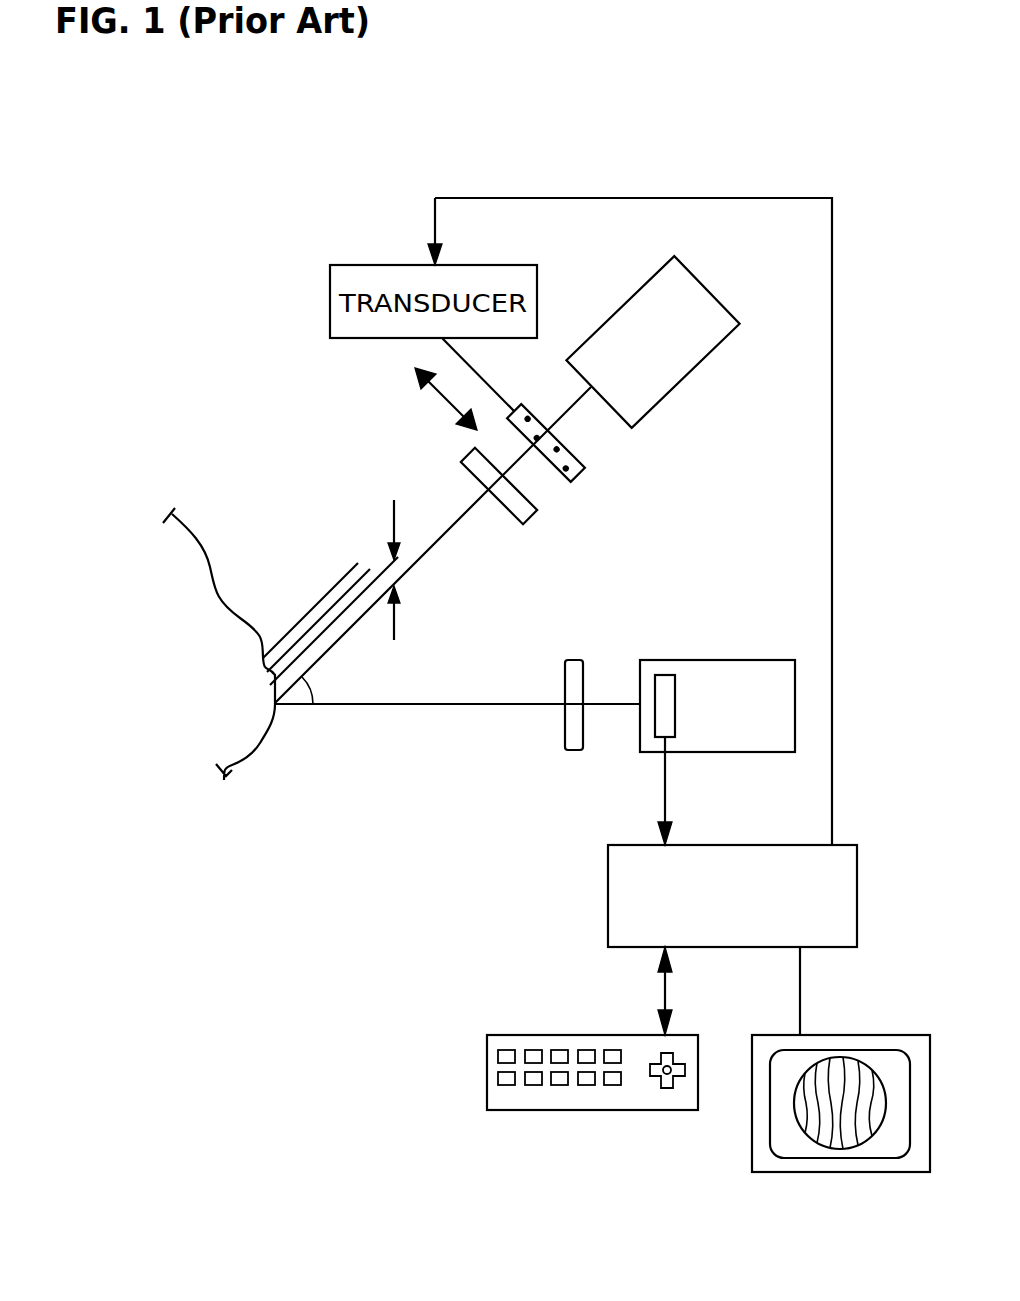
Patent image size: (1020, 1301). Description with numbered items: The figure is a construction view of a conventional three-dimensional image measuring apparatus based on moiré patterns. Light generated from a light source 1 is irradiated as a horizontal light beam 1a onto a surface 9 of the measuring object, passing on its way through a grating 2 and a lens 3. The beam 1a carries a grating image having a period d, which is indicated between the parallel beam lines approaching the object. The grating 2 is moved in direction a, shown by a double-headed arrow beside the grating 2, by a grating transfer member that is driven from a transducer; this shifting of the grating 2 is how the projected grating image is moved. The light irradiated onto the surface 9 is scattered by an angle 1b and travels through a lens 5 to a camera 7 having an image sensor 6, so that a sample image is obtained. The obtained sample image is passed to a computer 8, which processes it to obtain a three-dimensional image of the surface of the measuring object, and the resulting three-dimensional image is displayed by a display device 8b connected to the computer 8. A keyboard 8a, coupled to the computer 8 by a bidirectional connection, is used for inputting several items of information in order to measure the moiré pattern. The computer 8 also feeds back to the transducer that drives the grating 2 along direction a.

The light source 1 is at (670, 377).
The horizontal light beam 1a is at (332, 600).
The angle 1b is at (315, 690).
The grating 2 is at (588, 479).
The lens 3 is at (530, 522).
The lens 5 is at (563, 746).
The image sensor 6 is at (665, 675).
The camera 7 is at (753, 660).
The computer 8 is at (857, 897).
The keyboard 8a is at (612, 1110).
The display device 8b is at (838, 1172).
The surface of the measuring object 9 is at (262, 745).
The direction of an arrow a is at (447, 397).
The period of the grating image d is at (403, 570).